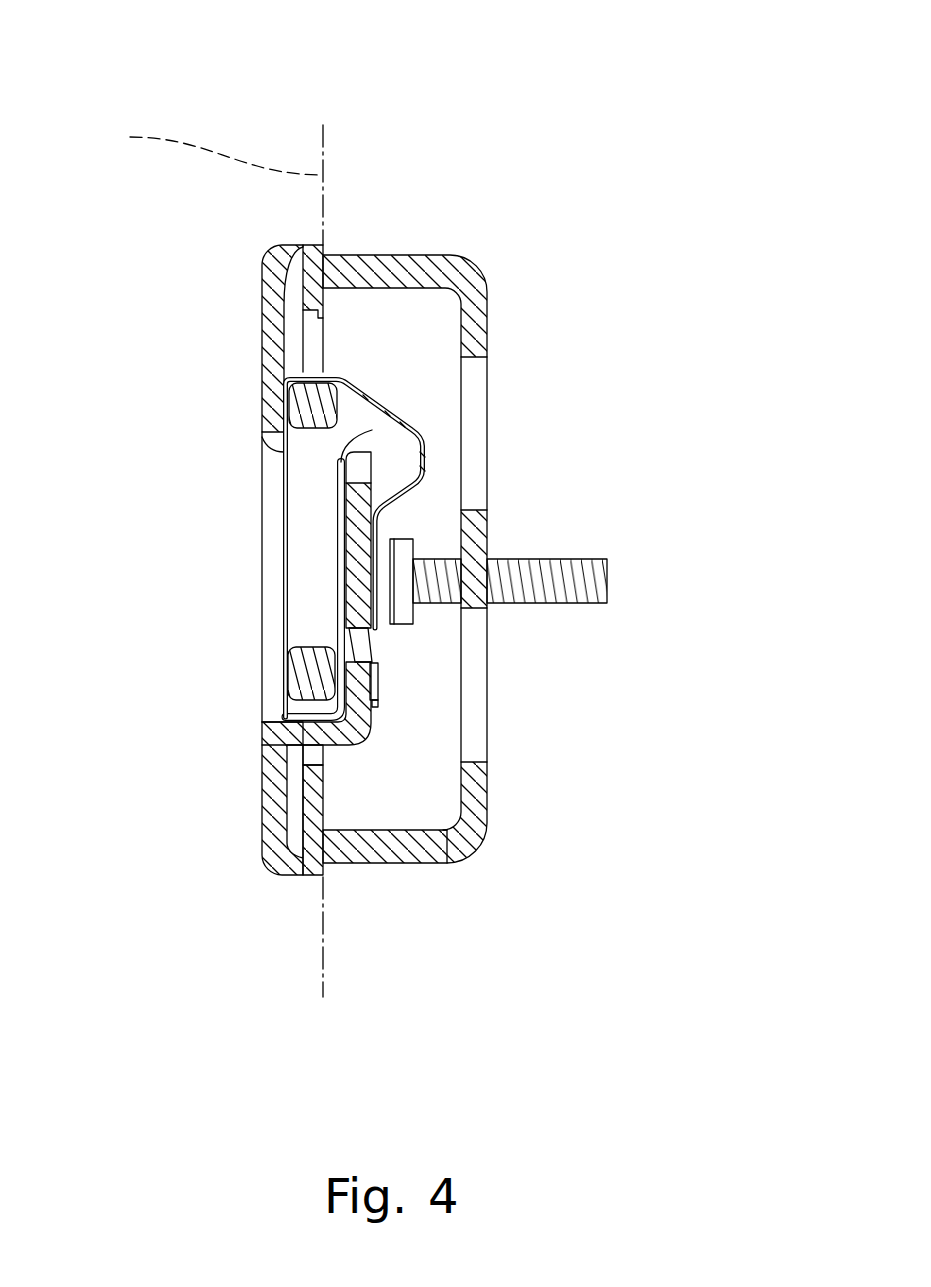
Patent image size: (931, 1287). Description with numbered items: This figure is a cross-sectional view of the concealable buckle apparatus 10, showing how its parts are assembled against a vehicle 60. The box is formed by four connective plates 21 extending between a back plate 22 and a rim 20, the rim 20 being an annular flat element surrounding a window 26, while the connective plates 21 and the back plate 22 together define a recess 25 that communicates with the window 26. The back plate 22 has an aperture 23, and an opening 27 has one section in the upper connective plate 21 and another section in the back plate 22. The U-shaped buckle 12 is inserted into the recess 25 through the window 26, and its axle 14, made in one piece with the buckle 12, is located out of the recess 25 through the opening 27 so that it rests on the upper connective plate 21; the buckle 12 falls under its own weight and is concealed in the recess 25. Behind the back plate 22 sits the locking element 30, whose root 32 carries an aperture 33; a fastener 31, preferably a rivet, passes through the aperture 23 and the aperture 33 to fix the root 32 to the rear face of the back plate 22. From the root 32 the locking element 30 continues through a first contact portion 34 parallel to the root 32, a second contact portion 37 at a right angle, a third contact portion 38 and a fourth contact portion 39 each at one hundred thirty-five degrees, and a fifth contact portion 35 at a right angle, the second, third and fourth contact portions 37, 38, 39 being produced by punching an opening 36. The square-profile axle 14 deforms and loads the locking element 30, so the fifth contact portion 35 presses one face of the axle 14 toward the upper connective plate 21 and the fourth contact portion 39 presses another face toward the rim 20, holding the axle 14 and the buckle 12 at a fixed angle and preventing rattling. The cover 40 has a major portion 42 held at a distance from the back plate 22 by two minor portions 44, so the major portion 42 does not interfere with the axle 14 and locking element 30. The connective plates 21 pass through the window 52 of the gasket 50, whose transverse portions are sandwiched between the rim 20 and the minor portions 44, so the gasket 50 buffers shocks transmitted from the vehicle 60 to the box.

The concealable buckle apparatus 10 is at (419, 180).
The buckle 12 is at (307, 678).
The axle 14 is at (298, 400).
The rim 20 is at (272, 800).
The connective plates 21 is at (325, 737).
The back plate 22 is at (362, 540).
The aperture 23 is at (353, 644).
The recess 25 is at (312, 722).
The window 26 is at (262, 588).
The opening 27 is at (350, 480).
The locking element 30 is at (392, 708).
The fastener 31 is at (378, 662).
The root 32 is at (375, 688).
The aperture 33 is at (375, 625).
The first contact portion 34 is at (423, 467).
The fifth contact portion 35 is at (310, 372).
The opening 36 is at (352, 372).
The second contact portion 37 is at (400, 425).
The third contact portion 38 is at (382, 410).
The fourth contact portion 39 is at (347, 383).
The cover 40 is at (508, 952).
The major portion 42 is at (480, 802).
The minor portions 44 is at (418, 855).
The gasket 50 is at (312, 860).
The window 52 is at (323, 318).
The vehicle 60 is at (207, 149).